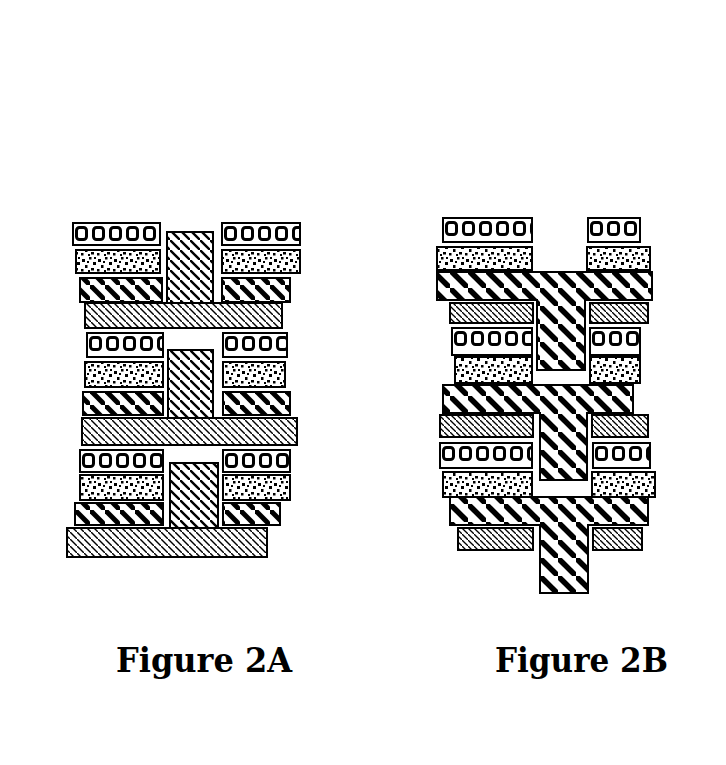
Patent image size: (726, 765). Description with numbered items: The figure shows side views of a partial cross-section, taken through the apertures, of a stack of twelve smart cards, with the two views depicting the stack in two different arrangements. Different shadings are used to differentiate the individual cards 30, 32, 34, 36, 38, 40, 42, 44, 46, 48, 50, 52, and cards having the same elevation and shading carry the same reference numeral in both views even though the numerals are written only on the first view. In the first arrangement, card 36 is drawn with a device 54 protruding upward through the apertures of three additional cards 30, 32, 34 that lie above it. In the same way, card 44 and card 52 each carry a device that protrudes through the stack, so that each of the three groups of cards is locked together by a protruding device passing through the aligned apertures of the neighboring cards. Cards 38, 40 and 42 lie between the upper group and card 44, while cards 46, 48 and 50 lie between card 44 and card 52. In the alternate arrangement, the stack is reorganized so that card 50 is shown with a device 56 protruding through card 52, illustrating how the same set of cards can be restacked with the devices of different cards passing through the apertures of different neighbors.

In FIG. 2A, the card 30 is at (303, 228).
In FIG. 2A, the card 32 is at (291, 276).
In FIG. 2A, the card 34 is at (282, 296).
In FIG. 2A, the card 36 is at (283, 322).
In FIG. 2A, the card 38 is at (290, 350).
In FIG. 2A, the card 40 is at (293, 377).
In FIG. 2A, the card 42 is at (298, 413).
In FIG. 2A, the card 44 is at (303, 440).
In FIG. 2A, the card 46 is at (292, 458).
In FIG. 2A, the card 48 is at (288, 487).
In FIG. 2A, the card 50 is at (280, 515).
In FIG. 2A, the card 52 is at (264, 553).
In FIG. 2A, the device 54 is at (170, 233).
In FIG. 2B, the device 56 is at (540, 582).